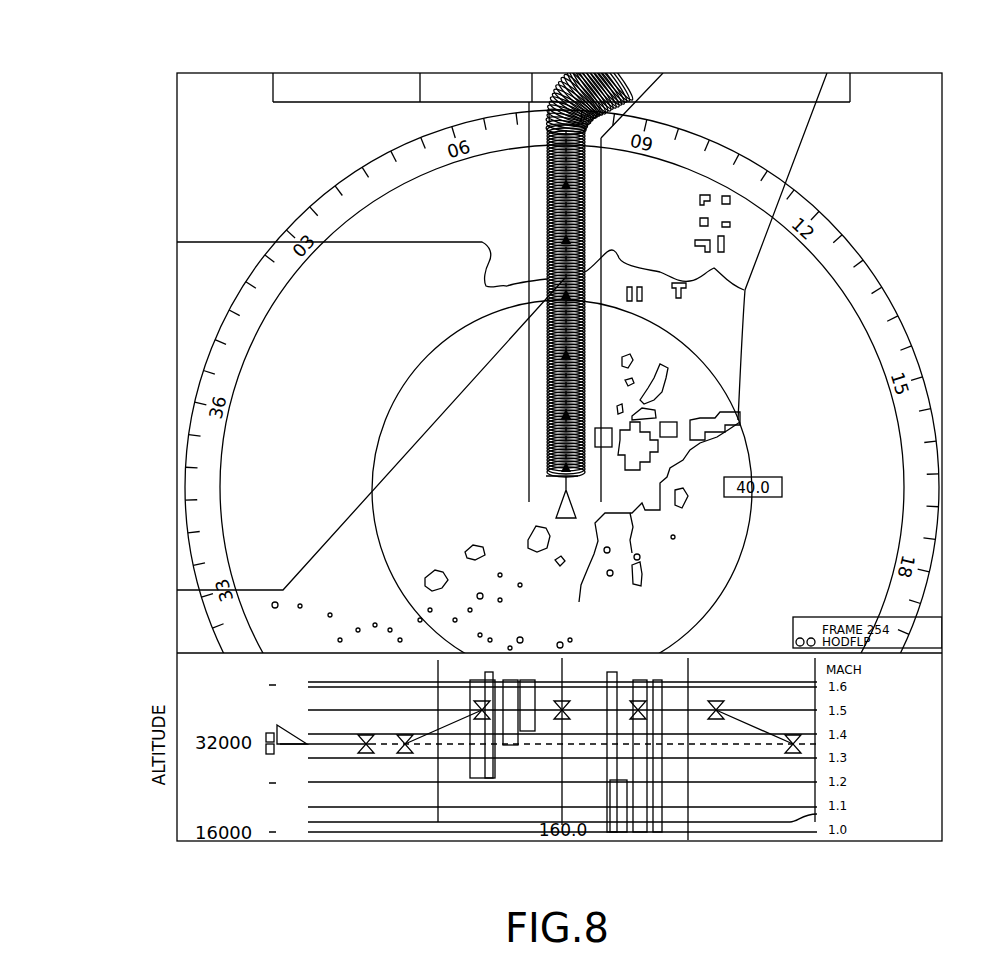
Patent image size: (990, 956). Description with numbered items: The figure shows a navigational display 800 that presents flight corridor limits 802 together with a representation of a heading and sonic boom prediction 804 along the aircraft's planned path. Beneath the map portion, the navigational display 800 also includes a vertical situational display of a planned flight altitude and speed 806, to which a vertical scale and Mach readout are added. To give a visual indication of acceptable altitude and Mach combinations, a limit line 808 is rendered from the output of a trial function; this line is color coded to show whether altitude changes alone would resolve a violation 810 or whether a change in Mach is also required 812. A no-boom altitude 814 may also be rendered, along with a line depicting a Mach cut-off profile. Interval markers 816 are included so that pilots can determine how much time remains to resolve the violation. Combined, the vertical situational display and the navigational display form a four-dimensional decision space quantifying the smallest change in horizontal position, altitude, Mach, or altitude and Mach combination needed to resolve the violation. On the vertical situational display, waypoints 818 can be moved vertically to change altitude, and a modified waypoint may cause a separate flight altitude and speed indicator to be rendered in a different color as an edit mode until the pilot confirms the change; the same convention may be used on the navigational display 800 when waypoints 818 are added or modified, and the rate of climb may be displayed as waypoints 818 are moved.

The navigational display 800 is at (136, 57).
The flight corridor limits 802 is at (529, 165).
The representation of a heading and sonic boom prediction 804 is at (585, 320).
The vertical situational display of a planned flight altitude and speed 806 is at (322, 742).
The limit line 808 is at (369, 681).
The violation resolvable by altitude changes 810 is at (481, 718).
The violation requiring a change in Mach 812 is at (612, 680).
The no-boom altitude 814 is at (785, 822).
The interval markers 816 is at (437, 792).
The waypoints 818 is at (367, 747).